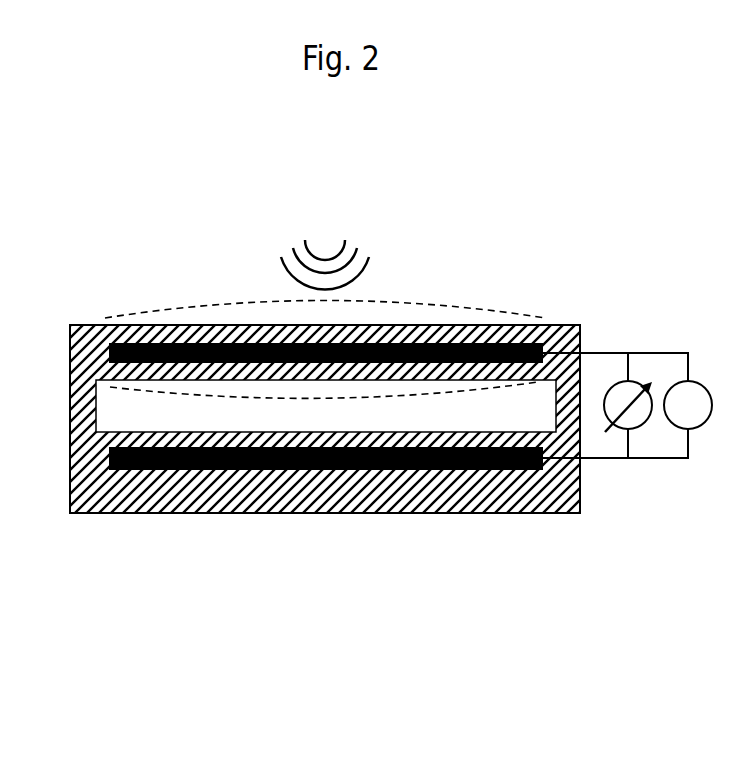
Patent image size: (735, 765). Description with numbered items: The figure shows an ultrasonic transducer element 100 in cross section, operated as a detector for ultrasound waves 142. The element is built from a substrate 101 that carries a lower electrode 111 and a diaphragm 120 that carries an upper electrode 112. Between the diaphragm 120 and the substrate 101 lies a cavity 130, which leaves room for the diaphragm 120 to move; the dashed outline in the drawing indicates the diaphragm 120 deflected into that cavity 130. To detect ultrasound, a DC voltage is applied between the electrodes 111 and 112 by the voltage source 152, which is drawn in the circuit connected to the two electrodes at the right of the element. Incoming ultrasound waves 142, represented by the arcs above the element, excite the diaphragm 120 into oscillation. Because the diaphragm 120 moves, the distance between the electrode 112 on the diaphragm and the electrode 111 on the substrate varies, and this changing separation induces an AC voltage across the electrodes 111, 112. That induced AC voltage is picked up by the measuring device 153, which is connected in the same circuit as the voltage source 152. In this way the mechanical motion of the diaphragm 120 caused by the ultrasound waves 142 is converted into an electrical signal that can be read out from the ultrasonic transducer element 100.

The ultrasonic transducer element 100 is at (96, 262).
The substrate 101 is at (503, 513).
The electrode 111 is at (126, 474).
The electrode 112 is at (233, 363).
The diaphragm 120 is at (210, 398).
The cavity 130 is at (290, 420).
The ultrasound waves 142 is at (347, 270).
The voltage source 152 is at (703, 430).
The measuring device 153 is at (645, 423).